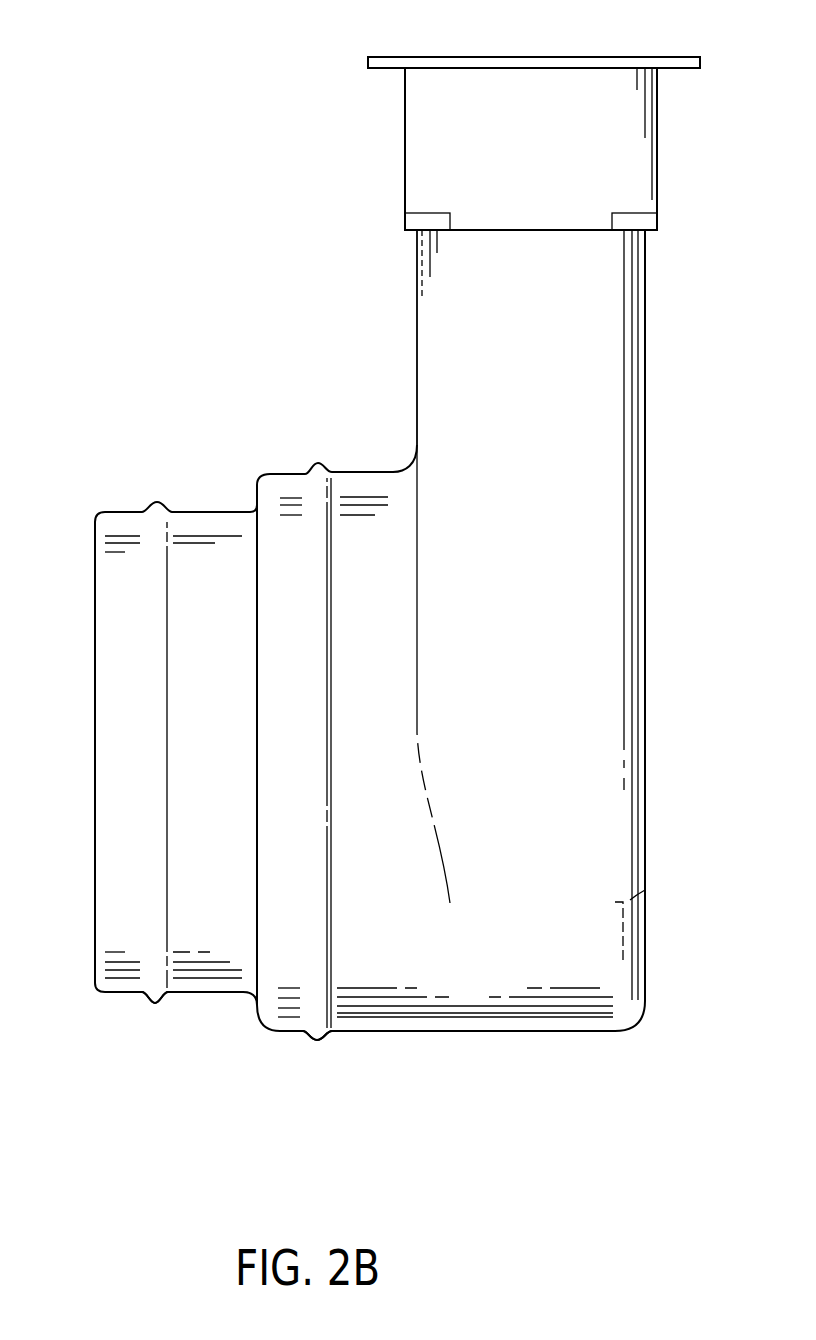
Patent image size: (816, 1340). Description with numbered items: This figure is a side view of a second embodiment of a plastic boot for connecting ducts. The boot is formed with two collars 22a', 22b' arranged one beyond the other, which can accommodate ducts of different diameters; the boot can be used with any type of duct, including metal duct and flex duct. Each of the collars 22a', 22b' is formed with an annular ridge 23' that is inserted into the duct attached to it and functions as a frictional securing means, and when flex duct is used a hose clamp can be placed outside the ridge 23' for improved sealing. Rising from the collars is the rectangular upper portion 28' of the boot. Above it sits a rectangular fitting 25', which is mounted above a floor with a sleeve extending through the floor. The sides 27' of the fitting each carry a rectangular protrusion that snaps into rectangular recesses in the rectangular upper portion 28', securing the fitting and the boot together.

The rectangular fitting 25' is at (534, 35).
The sides 27' is at (531, 149).
The rectangular upper portion 28' is at (531, 630).
The collar 22b' is at (436, 717).
The collar 22a' is at (155, 723).
The annular ridge 23' is at (206, 1036).